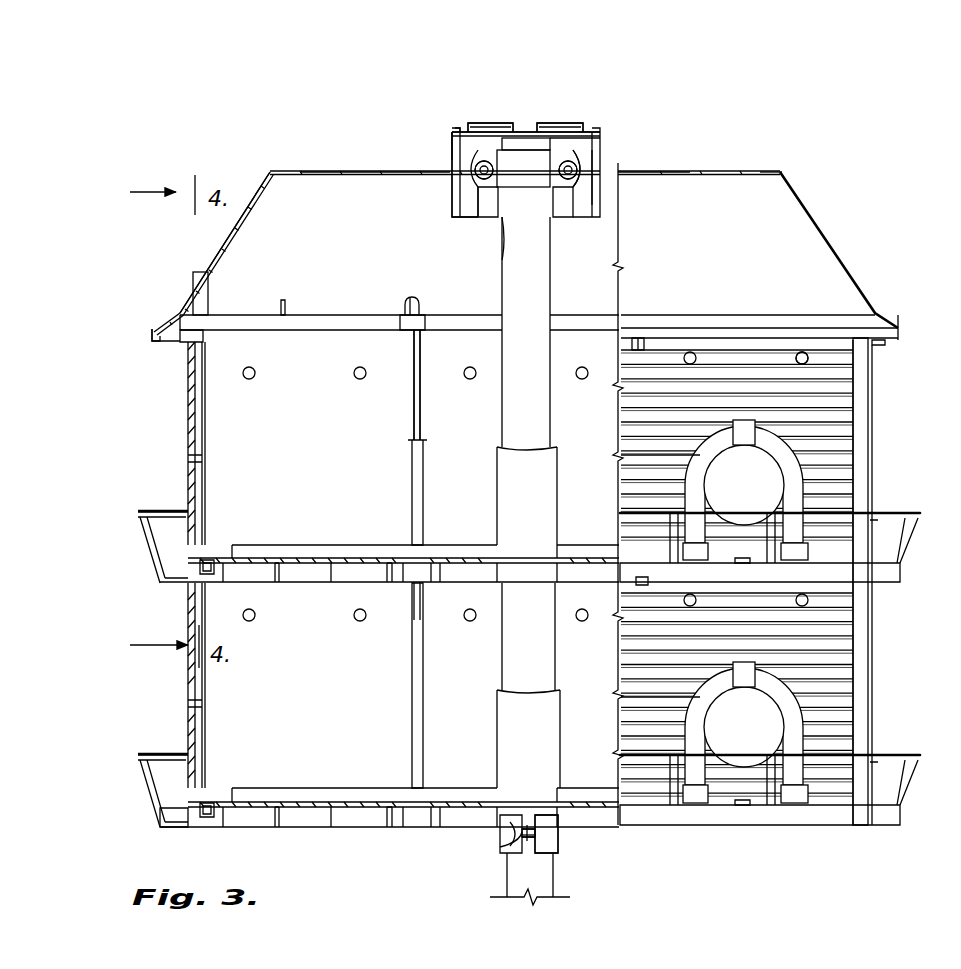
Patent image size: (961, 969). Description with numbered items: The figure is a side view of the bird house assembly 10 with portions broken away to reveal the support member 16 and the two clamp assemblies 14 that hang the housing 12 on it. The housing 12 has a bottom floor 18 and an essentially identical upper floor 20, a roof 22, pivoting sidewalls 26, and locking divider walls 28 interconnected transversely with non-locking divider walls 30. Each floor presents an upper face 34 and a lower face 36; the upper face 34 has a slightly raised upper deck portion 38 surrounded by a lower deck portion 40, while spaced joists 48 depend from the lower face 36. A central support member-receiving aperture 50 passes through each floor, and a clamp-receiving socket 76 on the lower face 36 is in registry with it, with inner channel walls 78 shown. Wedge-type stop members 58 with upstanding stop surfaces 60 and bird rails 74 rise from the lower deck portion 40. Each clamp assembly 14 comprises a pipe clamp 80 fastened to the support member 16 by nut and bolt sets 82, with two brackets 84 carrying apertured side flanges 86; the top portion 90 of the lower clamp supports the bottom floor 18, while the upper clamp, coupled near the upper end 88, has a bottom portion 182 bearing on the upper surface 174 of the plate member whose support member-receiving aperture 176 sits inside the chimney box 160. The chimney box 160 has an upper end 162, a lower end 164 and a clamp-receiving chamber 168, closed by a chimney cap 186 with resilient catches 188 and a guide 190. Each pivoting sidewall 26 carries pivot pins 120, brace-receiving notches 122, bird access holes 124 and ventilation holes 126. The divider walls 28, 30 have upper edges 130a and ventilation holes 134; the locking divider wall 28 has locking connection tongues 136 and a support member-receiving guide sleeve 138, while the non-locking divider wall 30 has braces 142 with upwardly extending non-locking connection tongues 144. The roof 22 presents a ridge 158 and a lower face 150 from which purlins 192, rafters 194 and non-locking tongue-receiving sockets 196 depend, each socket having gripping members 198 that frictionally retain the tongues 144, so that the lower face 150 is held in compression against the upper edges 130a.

The bird house assembly 10 is at (272, 146).
The housing 12 is at (878, 247).
The clamp assembly 14 is at (658, 100).
The support member 16 is at (530, 270).
The bottom floor 18 is at (806, 823).
The upper floor 20 is at (893, 576).
The roof 22 is at (793, 222).
The pivoting sidewall 26 is at (835, 415).
The locking divider wall 28 is at (290, 355).
The non-locking divider wall 30 is at (420, 462).
The upper face 34 is at (258, 553).
The lower face 36 is at (352, 578).
The upper deck portion 38 is at (230, 800).
The lower deck portion 40 is at (172, 805).
The joists 48 is at (240, 580).
The support member-receiving aperture 50 is at (522, 818).
The stop member 58 is at (745, 611).
The stop surface 60 is at (760, 570).
The bird rail 74 is at (170, 515).
The clamp-receiving socket 76 is at (528, 825).
The inner channel walls 78 is at (548, 818).
The pipe clamp 80 is at (478, 150).
The nut and bolt set 82 is at (558, 170).
The bracket 84 is at (596, 178).
The side flange 86 is at (473, 174).
The upper end 88 is at (545, 136).
The top portion 90 is at (600, 152).
The pivot pin 120 is at (190, 350).
The brace-receiving notch 122 is at (638, 345).
The bird access hole 124 is at (722, 470).
The ventilation hole 126 is at (802, 352).
The upper edge 130a is at (470, 330).
The ventilation holes 134 is at (460, 128).
The locking connection tongue 136 is at (207, 560).
The support member-receiving guide sleeve 138 is at (508, 515).
The brace 142 is at (410, 480).
The non-locking connection tongue 144 is at (416, 330).
The lower face 150 is at (168, 338).
The ridge 158 is at (762, 172).
The chimney box 160 is at (452, 165).
The upper end 162 is at (453, 150).
The lower end 164 is at (480, 200).
The clamp-receiving chamber 168 is at (608, 166).
The upper surface 174 is at (484, 208).
The support member-receiving aperture 176 is at (508, 217).
The bottom portion 182 is at (548, 200).
The chimney cap 186 is at (480, 127).
The catch 188 is at (600, 140).
The guide 190 is at (526, 138).
The purlins 192 is at (204, 318).
The rafters 194 is at (182, 312).
The non-locking tongue-receiving socket 196 is at (405, 322).
The gripping member 198 is at (402, 322).